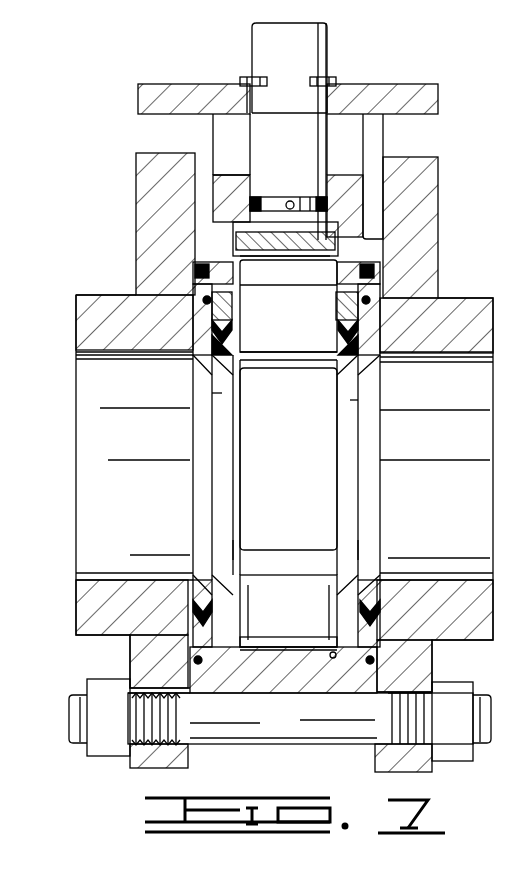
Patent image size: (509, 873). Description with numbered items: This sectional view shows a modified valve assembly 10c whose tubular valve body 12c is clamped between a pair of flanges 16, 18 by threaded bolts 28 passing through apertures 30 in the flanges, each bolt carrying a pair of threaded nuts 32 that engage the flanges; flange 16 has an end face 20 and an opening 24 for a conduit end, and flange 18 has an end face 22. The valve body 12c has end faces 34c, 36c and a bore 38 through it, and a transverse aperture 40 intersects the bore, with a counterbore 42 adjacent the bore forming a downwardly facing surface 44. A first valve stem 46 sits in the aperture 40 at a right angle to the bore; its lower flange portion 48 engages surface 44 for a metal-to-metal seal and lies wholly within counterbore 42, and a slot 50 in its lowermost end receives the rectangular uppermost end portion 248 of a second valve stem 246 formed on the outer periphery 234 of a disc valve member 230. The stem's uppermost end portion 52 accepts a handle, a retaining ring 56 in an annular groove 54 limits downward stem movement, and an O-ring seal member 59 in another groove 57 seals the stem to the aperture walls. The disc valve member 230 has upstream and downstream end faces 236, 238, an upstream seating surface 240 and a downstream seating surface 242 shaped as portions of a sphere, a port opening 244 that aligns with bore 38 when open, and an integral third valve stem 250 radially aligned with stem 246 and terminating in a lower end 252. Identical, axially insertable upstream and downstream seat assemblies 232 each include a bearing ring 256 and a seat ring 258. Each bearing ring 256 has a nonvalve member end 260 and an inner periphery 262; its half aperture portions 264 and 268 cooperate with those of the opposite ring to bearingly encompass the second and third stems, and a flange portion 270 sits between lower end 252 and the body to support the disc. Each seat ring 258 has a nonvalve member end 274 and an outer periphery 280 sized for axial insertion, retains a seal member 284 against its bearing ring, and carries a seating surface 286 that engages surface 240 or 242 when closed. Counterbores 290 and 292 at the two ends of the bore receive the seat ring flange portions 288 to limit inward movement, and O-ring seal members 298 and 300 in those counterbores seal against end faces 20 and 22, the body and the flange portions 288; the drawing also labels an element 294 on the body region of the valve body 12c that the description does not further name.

The valve assembly 10c is at (398, 66).
The valve body 12c is at (302, 700).
The flange 16 is at (155, 765).
The flange 18 is at (404, 770).
The end face 20 is at (190, 766).
The end face 22 is at (366, 762).
The opening 24 is at (78, 575).
The threaded bolt 28 is at (252, 733).
The aperture 30 is at (130, 718).
The threaded nut 32 is at (100, 748).
The end face 34c is at (180, 700).
The end face 36c is at (432, 680).
The bore 38 is at (300, 655).
The aperture 40 is at (252, 148).
The counterbore 42 is at (231, 198).
The downwardly facing surface 44 is at (345, 206).
The first valve stem 46 is at (305, 142).
The lower flange portion 48 is at (250, 230).
The slot 50 is at (235, 253).
The uppermost end portion 52 is at (308, 38).
The annular groove 54 is at (268, 82).
The retaining ring 56 is at (248, 78).
The annular groove 57 is at (288, 202).
The O-ring seal member 59 is at (253, 200).
The disc valve member 230 is at (212, 420).
The seat assembly 232 is at (193, 560).
The outer periphery 234 is at (238, 352).
The upstream end face 236 is at (214, 444).
The downstream end face 238 is at (360, 428).
The upstream seating surface 240 is at (206, 372).
The downstream seating surface 242 is at (362, 372).
The port opening 244 is at (275, 437).
The second valve stem 246 is at (437, 258).
The uppermost end portion 248 is at (382, 252).
The third valve stem 250 is at (412, 610).
The lower end 252 is at (285, 668).
The bearing ring 256 is at (212, 322).
The seat ring 258 is at (212, 338).
The nonvalve member end 260 is at (200, 628).
The inner periphery 262 is at (325, 392).
The aperture portion 264 is at (320, 315).
The aperture portion 268 is at (318, 598).
The flange portion 270 is at (250, 647).
The nonvalve member end 274 is at (215, 297).
The outer periphery 280 is at (382, 660).
The seal member 284 is at (212, 393).
The seating surface 286 is at (236, 536).
The flange portion 288 is at (437, 290).
The counterbore 290 is at (195, 662).
The counterbore 292 is at (435, 665).
The body flange 294 is at (200, 330).
The O-ring seal member 298 is at (198, 266).
The O-ring seal member 300 is at (376, 272).